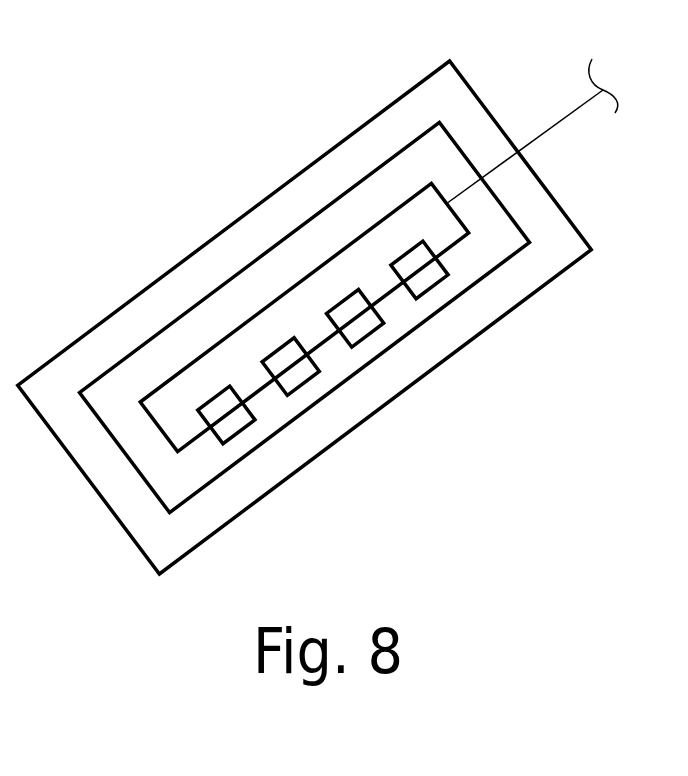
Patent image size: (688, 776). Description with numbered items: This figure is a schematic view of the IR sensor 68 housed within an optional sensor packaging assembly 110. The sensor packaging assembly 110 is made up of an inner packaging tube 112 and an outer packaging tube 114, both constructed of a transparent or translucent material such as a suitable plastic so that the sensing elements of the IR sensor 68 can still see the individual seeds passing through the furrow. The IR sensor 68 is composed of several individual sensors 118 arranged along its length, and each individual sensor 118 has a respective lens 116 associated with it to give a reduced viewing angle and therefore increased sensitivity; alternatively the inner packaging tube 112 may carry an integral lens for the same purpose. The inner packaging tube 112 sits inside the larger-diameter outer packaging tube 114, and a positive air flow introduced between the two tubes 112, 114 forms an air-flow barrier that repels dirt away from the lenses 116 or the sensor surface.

The sensor packaging assembly 110 is at (318, 299).
The inner packaging tube 112 is at (347, 190).
The outer packaging tube 114 is at (175, 270).
The IR sensor 68 is at (274, 278).
The lenses 116 is at (297, 388).
The individual sensor 118 is at (285, 344).